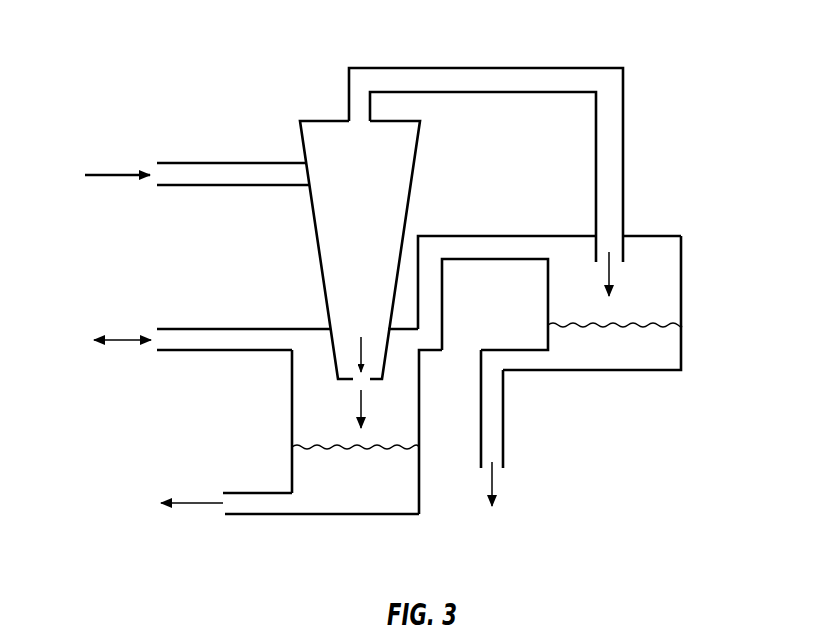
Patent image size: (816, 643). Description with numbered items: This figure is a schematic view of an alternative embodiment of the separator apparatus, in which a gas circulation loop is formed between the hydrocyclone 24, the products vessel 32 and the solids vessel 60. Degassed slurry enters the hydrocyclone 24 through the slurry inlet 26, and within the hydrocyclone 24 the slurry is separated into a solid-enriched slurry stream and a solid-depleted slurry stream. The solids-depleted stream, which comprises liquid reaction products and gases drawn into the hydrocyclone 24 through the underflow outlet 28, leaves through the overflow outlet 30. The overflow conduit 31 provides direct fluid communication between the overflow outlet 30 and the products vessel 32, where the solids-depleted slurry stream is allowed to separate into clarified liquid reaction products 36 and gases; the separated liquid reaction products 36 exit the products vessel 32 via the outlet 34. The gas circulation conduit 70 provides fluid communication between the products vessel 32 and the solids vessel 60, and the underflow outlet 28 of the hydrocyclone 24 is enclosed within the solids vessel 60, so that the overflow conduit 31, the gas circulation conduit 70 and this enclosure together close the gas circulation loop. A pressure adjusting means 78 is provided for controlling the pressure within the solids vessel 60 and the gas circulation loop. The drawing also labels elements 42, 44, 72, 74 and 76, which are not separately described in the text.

The hydrocyclone 24 is at (370, 191).
The slurry inlet 26 is at (296, 154).
The underflow outlet 28 is at (365, 367).
The overflow outlet 30 is at (366, 121).
The overflow conduit 31 is at (514, 85).
The products vessel 32 is at (682, 298).
The outlet 34 is at (504, 420).
The liquid reaction products 36 is at (627, 359).
The outlet conduit 42 is at (253, 507).
The liquid collection vessel 44 is at (370, 492).
The solids vessel 60 is at (291, 426).
The gas circulation conduit 70 is at (487, 247).
The inner baffle 72 is at (547, 271).
The downcomer conduit 74 is at (422, 418).
The return conduit 76 is at (226, 340).
The pressure adjusting means 78 is at (73, 351).